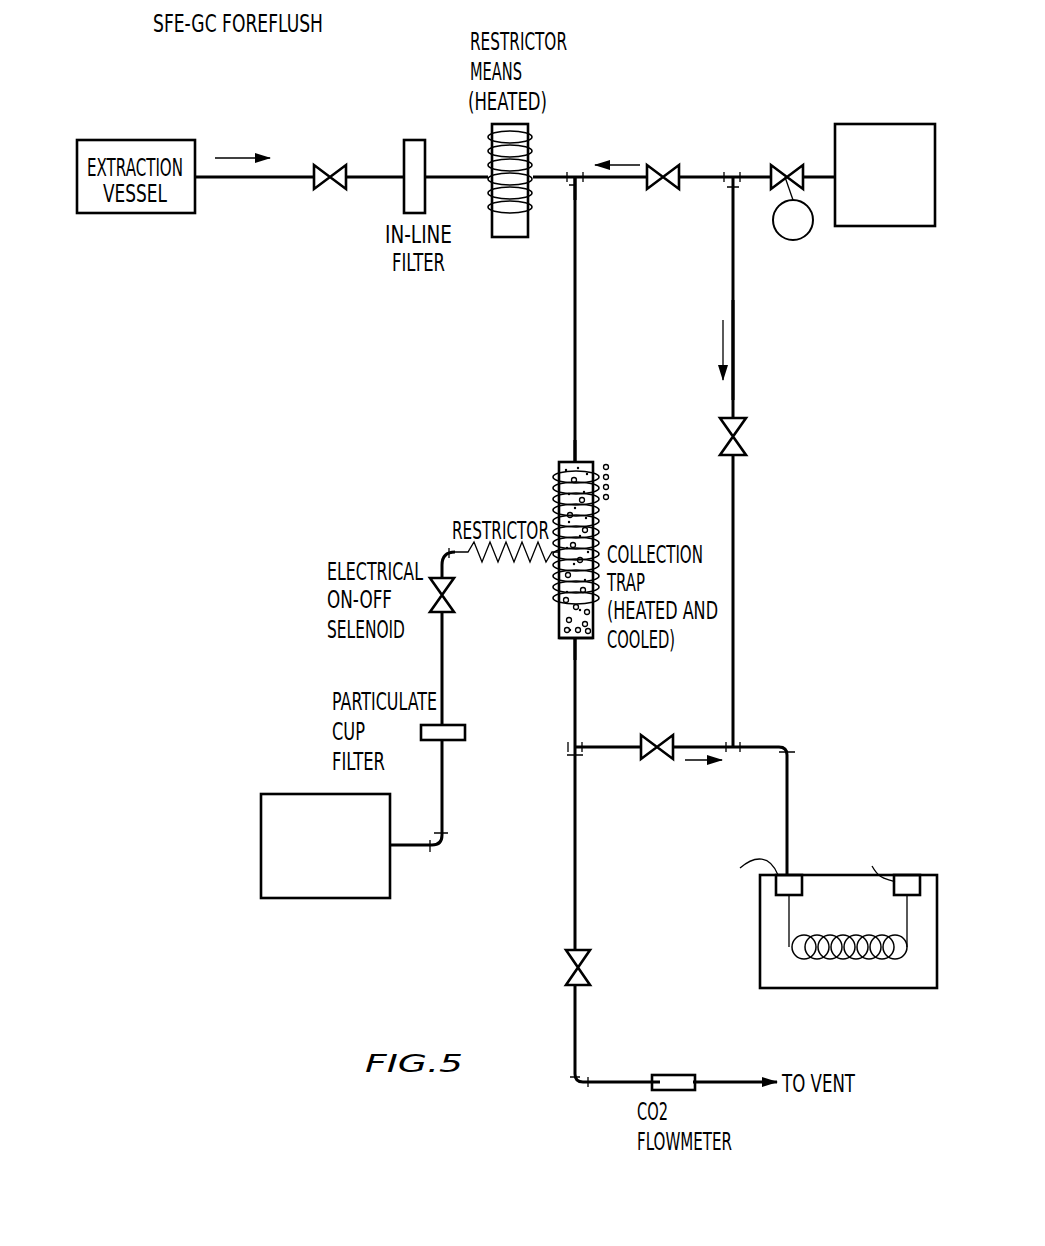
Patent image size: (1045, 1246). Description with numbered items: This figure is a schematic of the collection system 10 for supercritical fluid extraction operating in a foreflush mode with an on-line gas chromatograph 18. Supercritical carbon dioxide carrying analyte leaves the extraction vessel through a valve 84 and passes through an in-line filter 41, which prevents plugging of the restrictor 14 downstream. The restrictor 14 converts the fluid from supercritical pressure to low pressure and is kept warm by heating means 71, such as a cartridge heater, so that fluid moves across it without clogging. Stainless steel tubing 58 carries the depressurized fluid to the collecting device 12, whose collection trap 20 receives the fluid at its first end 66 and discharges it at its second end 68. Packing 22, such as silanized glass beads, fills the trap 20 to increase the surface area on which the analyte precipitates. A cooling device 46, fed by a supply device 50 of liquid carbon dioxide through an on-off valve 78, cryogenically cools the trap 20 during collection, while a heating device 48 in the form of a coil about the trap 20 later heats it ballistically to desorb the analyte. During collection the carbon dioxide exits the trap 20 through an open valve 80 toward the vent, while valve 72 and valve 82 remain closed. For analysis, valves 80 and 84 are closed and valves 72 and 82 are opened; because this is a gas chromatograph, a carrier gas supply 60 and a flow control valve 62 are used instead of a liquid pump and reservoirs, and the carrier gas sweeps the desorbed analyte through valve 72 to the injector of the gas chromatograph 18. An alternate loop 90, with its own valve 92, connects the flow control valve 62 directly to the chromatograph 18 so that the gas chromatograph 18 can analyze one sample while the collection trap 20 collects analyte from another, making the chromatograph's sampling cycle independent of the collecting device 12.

The collection system 10 is at (293, 975).
The collecting device 12 is at (549, 577).
The restrictor 14 is at (501, 243).
The gas chromatograph 18 is at (858, 811).
The collection trap 20 is at (588, 645).
The packing 22 is at (566, 622).
The in-line filter 41 is at (414, 140).
The cooling device 46 is at (415, 873).
The heating device 48 is at (619, 481).
The liquid supply device 50 is at (270, 789).
The tubing 58 is at (601, 184).
The carrier gas supply 60 is at (913, 234).
The flow control valve 62 is at (781, 149).
The first end 66 is at (560, 459).
The second end 68 is at (569, 645).
The heating means 71 is at (532, 233).
The valve 72 is at (659, 731).
The on-off valve 78 is at (440, 573).
The valve 80 is at (591, 968).
The valve 82 is at (659, 163).
The valve 84 is at (325, 197).
The alternate loop 90 is at (745, 346).
The valve 92 is at (760, 433).